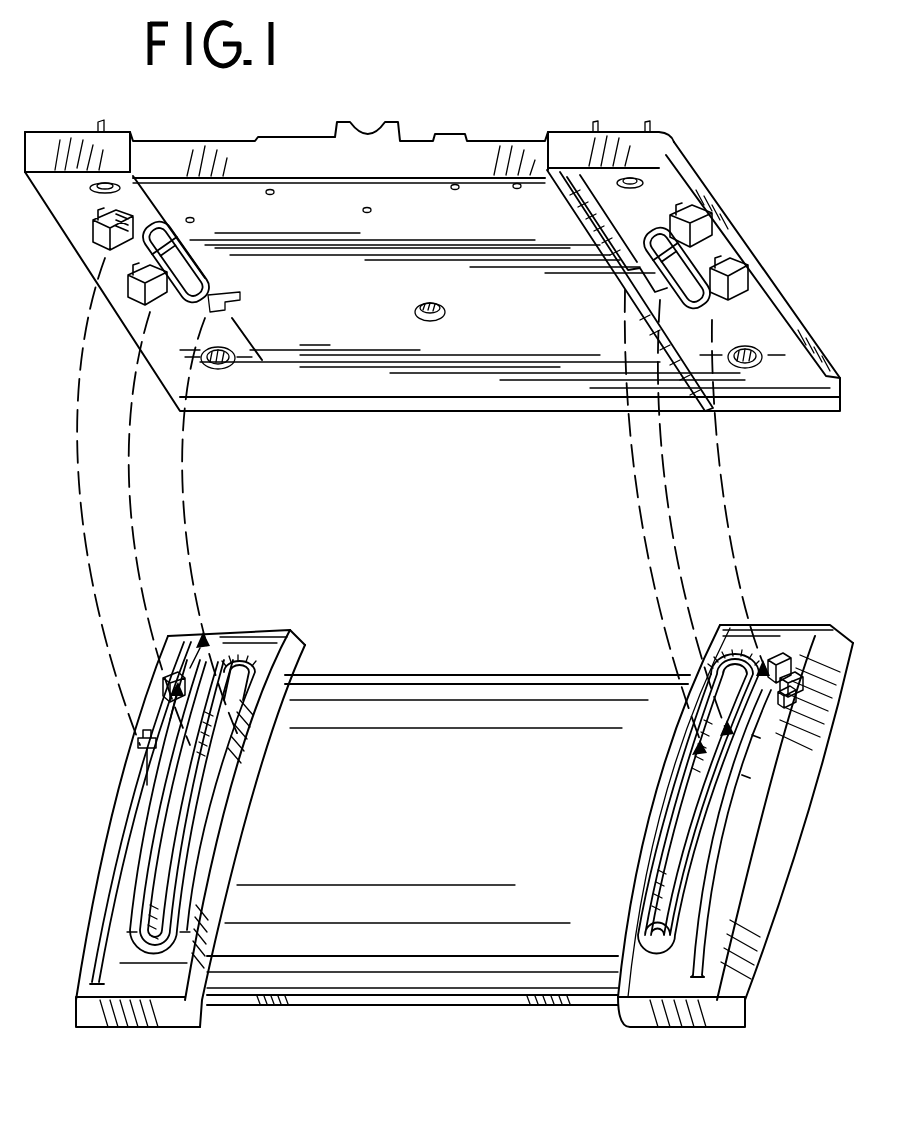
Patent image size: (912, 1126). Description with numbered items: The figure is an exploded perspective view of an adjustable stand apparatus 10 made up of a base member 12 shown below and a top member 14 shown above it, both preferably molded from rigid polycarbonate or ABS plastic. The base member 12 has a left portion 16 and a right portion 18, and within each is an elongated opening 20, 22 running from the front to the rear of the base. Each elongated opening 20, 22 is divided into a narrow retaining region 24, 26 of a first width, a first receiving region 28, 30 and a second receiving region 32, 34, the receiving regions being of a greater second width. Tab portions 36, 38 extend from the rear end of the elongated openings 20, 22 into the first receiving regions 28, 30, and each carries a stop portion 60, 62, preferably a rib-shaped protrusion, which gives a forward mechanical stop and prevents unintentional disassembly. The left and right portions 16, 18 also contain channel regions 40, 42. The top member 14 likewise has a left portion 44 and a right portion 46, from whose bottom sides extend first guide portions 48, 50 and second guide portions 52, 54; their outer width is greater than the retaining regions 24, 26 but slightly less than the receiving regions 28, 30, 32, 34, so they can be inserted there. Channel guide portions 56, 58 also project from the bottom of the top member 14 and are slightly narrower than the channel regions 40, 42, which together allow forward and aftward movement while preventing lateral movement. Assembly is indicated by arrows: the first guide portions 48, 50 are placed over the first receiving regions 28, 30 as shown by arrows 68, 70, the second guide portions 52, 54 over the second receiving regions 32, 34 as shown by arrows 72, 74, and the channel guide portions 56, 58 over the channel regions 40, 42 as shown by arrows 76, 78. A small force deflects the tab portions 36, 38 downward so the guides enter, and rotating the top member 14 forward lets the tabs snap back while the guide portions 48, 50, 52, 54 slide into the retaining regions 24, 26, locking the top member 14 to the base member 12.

The adjustable stand apparatus 10 is at (786, 184).
The base member 12 is at (343, 1005).
The top member 14 is at (463, 140).
The left portion 16 is at (137, 1030).
The right portion 18 is at (675, 1023).
The elongated opening 20 is at (96, 962).
The elongated opening 22 is at (703, 960).
The retaining region 24 is at (104, 838).
The retaining region 26 is at (717, 888).
The first receiving region 28 is at (165, 697).
The first receiving region 30 is at (784, 699).
The second receiving region 32 is at (143, 783).
The second receiving region 34 is at (752, 783).
The tab portion 36 is at (203, 632).
The tab portion 38 is at (778, 650).
The channel region 40 is at (160, 883).
The channel region 42 is at (670, 913).
The left portion 44 is at (69, 134).
The right portion 46 is at (611, 132).
The first guide portion 48 is at (140, 298).
The first guide portion 50 is at (748, 295).
The second guide portion 52 is at (95, 233).
The second guide portion 54 is at (696, 233).
The channel guide portion 56 is at (165, 226).
The channel guide portion 58 is at (709, 296).
The stop portion 60 is at (178, 682).
The stop portion 62 is at (800, 675).
The arrow 68 is at (128, 460).
The arrow 70 is at (742, 592).
The arrow 72 is at (72, 453).
The arrow 74 is at (662, 500).
The arrow 76 is at (182, 512).
The arrow 78 is at (630, 508).